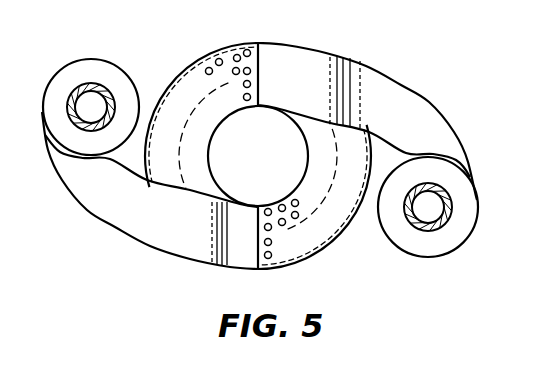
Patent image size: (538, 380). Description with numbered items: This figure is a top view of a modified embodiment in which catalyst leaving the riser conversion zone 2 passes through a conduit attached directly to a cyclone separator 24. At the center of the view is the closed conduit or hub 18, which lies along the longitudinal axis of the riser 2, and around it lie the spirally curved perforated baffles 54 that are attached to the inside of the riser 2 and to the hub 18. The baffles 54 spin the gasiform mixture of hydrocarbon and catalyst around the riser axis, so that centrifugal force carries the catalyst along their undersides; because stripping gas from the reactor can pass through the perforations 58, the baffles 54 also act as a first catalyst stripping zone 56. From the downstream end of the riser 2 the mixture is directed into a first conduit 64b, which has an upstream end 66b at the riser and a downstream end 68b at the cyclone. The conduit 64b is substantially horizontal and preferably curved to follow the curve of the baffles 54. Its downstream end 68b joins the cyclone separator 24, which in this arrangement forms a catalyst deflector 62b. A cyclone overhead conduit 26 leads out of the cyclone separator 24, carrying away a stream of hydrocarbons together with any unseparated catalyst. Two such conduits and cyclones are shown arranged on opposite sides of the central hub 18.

The riser conversion zone 2 is at (244, 43).
The closed conduit (hub) 18 is at (279, 120).
The cyclone separator 24 is at (57, 73).
The cyclone overhead conduit 26 is at (77, 90).
The perforated baffles 54 is at (196, 70).
The first catalyst stripping zone 56 is at (215, 58).
The perforations 58 is at (207, 77).
The catalyst deflector 62b is at (122, 47).
The first conduit 64b is at (298, 62).
The upstream end 66b is at (267, 63).
The downstream end 68b is at (430, 138).